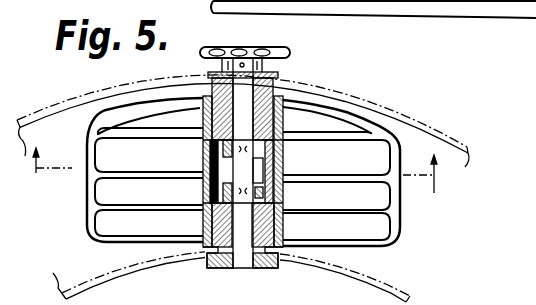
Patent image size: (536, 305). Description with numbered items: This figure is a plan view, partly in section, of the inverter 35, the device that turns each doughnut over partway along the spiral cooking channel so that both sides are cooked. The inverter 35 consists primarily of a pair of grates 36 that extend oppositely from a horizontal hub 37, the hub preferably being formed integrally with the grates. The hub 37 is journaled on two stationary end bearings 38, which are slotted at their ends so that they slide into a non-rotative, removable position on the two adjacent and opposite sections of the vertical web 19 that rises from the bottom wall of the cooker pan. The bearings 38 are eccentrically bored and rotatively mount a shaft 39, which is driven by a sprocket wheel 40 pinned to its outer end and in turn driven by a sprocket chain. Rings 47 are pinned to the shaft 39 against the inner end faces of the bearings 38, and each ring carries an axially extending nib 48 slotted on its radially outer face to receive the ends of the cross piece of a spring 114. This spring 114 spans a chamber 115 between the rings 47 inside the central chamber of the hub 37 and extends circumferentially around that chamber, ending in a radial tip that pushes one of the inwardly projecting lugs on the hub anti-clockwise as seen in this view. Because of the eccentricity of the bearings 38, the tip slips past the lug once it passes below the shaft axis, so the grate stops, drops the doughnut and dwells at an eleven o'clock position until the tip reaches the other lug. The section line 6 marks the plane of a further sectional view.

The section line 6- 6 is at (235, 181).
The vertical web 19 is at (376, 94).
The inverter 35 is at (430, 254).
The grates 36 is at (108, 208).
The horizontal hub 37 is at (215, 150).
The stationary end bearings 38 is at (282, 98).
The shaft 39 is at (238, 268).
The sprocket wheel 40 is at (278, 50).
The rings 47 is at (283, 133).
The nib 48 is at (226, 180).
The spring 114 is at (264, 166).
The chamber 115 is at (266, 193).